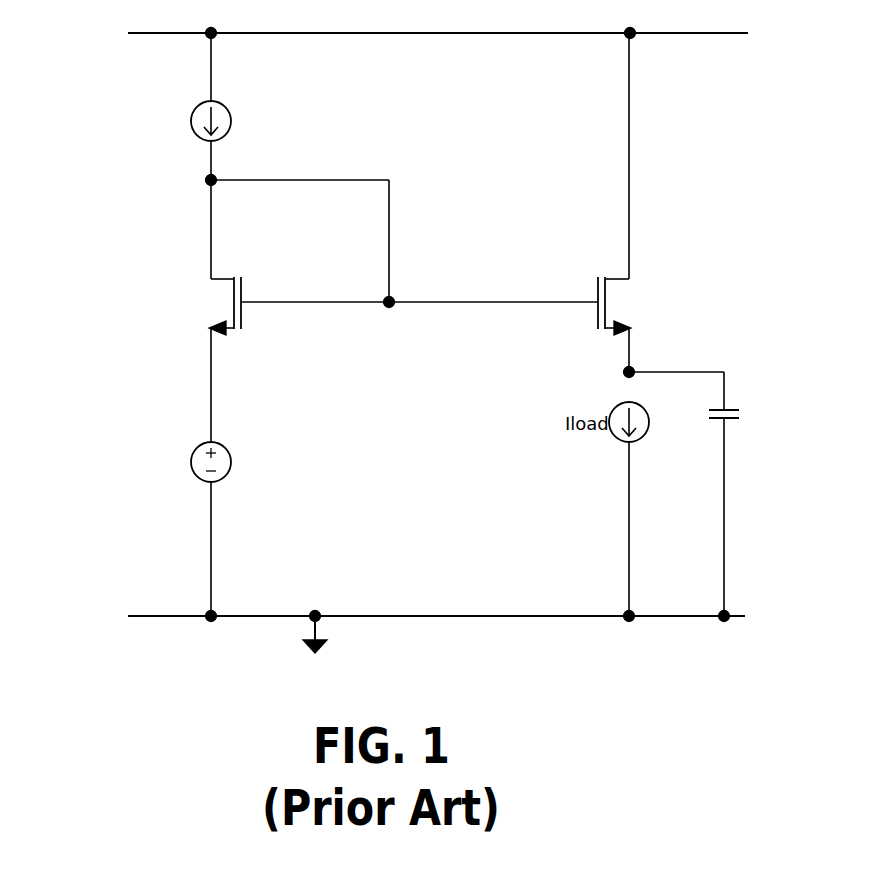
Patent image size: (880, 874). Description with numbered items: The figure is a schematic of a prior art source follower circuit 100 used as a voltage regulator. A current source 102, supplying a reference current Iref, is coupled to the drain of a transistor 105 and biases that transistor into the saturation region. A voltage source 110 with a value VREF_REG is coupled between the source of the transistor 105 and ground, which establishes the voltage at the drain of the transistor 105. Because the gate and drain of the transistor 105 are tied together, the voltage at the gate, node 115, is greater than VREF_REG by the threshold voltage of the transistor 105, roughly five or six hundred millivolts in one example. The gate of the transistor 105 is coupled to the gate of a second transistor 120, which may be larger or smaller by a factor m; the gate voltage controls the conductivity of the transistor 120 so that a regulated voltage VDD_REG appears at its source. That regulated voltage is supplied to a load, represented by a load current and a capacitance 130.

The source follower circuit 100 is at (74, 503).
The current source 102 is at (246, 106).
The transistor 105 is at (250, 311).
The voltage source 110 is at (264, 521).
The node 115 is at (389, 307).
The second transistor 120 is at (644, 205).
The capacitance 130 is at (752, 494).